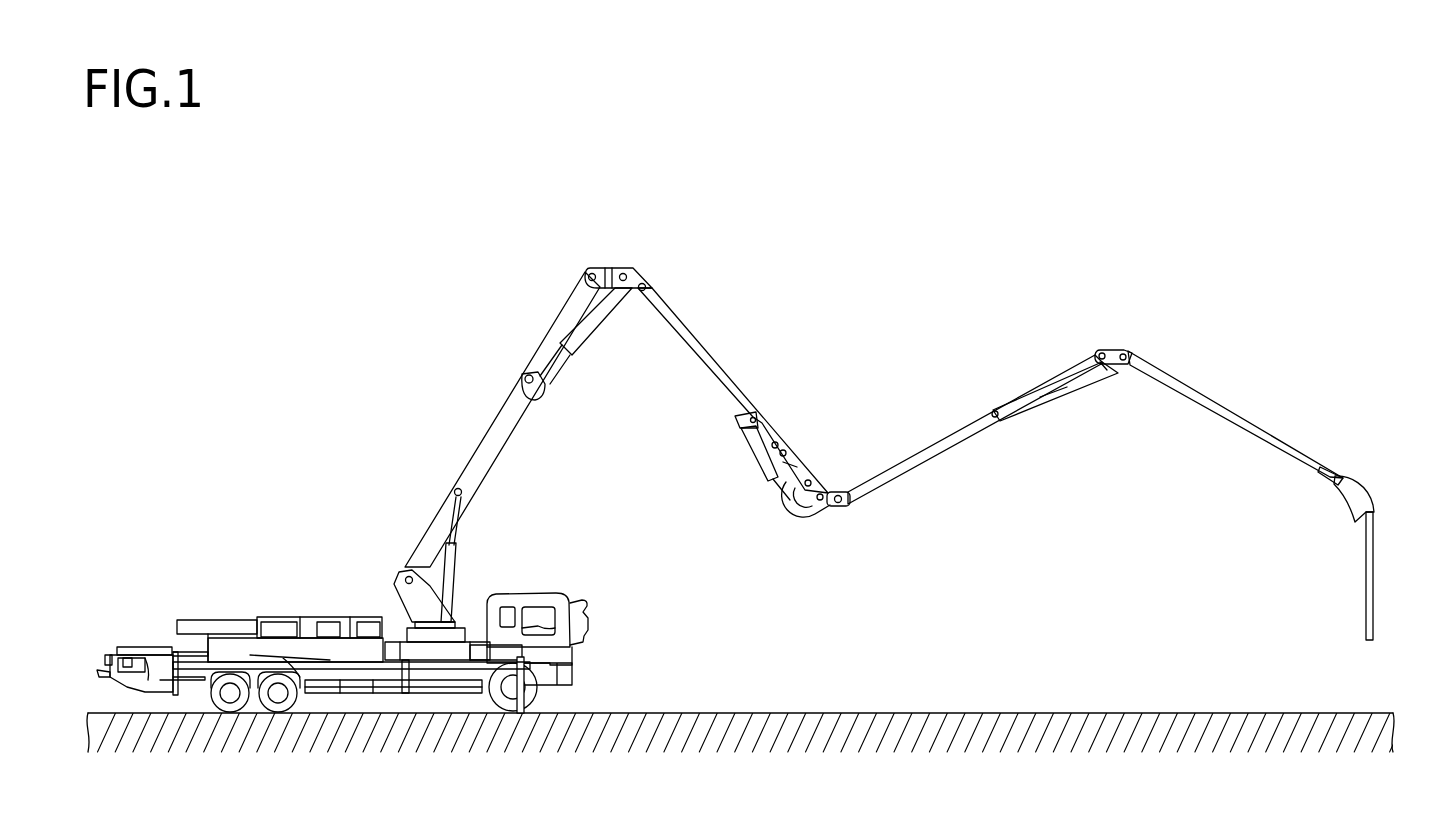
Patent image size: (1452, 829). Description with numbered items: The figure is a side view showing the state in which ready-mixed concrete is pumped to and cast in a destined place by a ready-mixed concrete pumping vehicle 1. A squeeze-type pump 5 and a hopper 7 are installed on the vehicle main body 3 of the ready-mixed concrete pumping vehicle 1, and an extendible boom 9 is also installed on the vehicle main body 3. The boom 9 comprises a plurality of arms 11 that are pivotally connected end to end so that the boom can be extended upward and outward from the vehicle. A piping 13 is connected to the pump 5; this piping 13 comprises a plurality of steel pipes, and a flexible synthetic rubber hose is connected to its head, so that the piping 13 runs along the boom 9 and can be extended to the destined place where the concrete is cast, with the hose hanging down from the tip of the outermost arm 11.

The ready-mixed concrete pumping vehicle 1 is at (535, 592).
The vehicle main body 3 is at (386, 693).
The squeeze-type pump 5 is at (290, 613).
The hopper 7 is at (160, 645).
The extendible boom 9 is at (506, 404).
The arms 11 is at (470, 455).
The piping 13 is at (1377, 559).